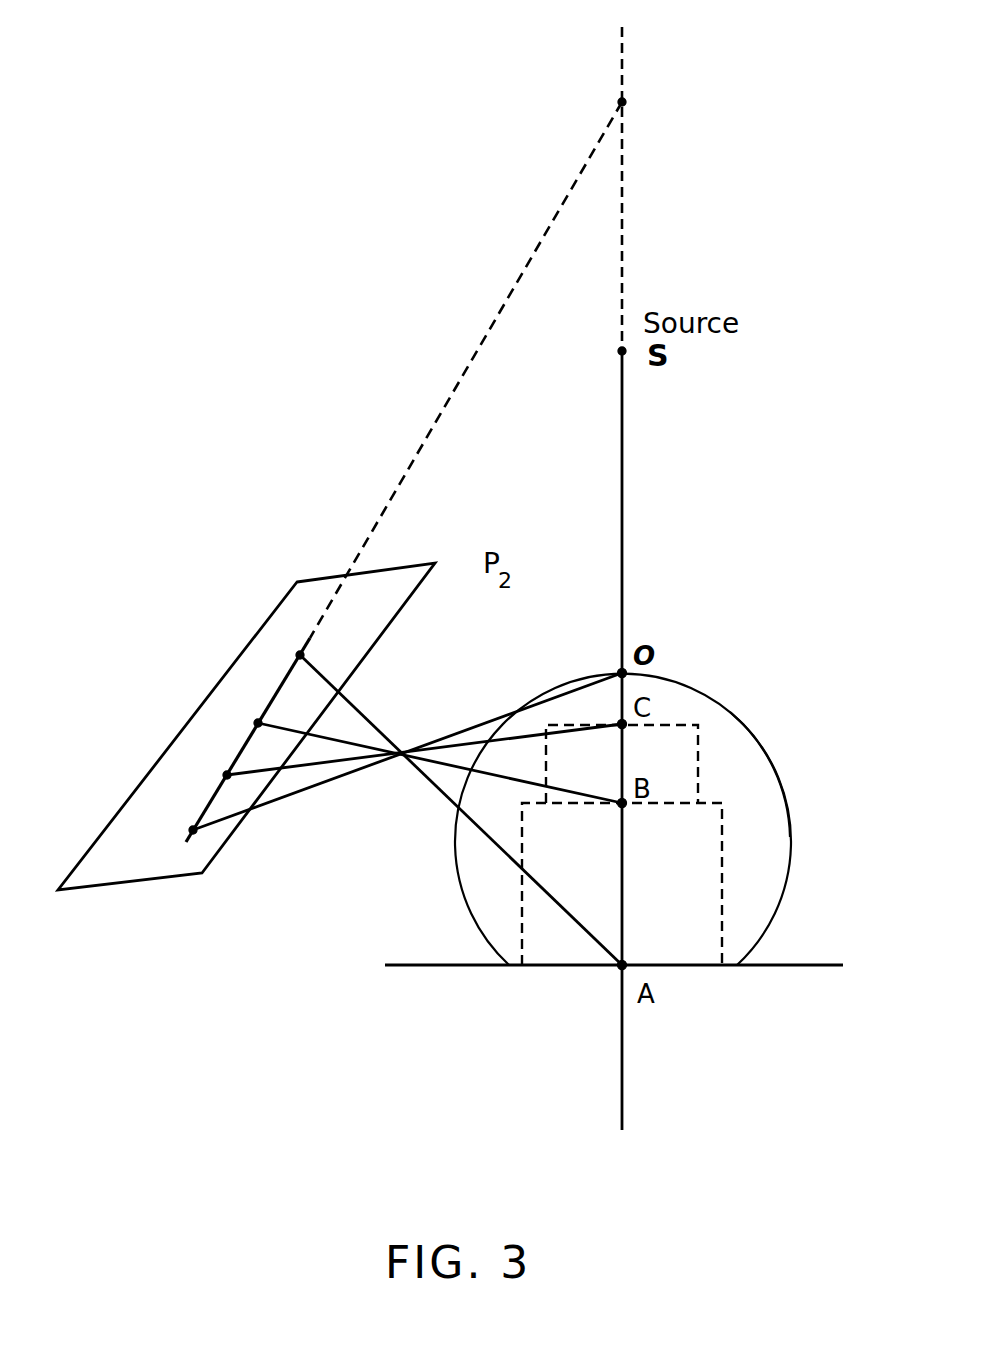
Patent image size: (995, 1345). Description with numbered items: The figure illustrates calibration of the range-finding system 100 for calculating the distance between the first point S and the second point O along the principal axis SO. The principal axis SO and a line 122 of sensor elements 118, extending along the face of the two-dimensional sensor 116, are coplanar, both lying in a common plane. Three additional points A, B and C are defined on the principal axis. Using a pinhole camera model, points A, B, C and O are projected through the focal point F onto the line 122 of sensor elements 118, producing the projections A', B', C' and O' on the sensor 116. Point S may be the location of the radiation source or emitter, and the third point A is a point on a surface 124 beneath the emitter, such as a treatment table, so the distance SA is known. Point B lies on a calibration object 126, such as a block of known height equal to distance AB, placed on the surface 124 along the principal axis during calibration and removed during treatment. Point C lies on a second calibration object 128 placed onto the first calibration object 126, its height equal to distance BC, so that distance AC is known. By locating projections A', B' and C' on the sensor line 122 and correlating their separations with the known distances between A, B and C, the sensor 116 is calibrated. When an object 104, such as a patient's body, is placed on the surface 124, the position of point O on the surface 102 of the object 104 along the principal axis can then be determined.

The system 100 is at (403, 216).
The surface 102 is at (687, 685).
The object 104 is at (730, 712).
The sensor 116 is at (268, 617).
The sensor elements 118 is at (285, 670).
The line of sensor elements 122 is at (445, 405).
The surface 124 is at (792, 963).
The calibration object 126 is at (723, 868).
The second calibration object 128 is at (698, 757).